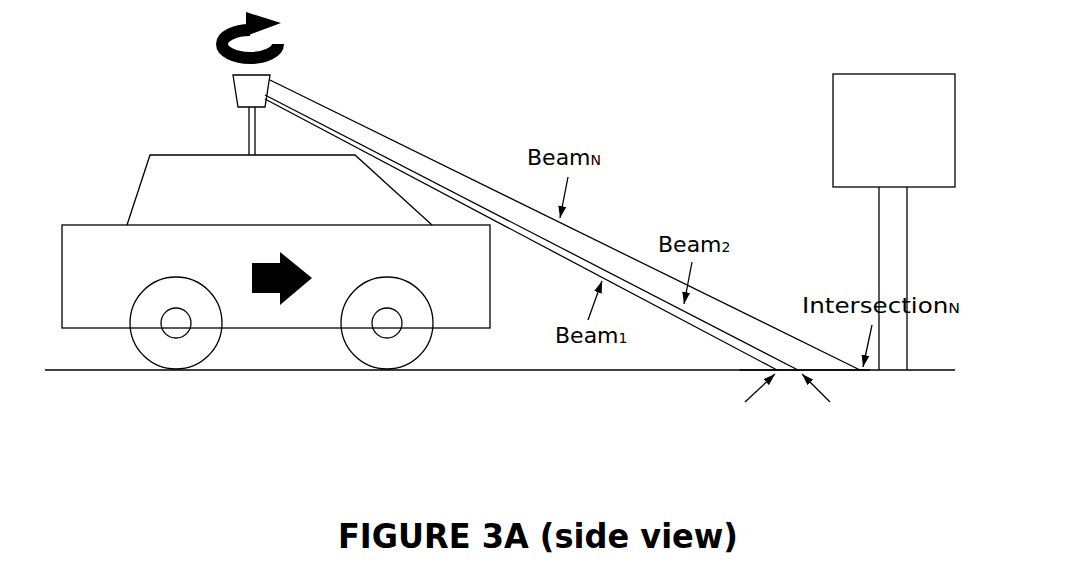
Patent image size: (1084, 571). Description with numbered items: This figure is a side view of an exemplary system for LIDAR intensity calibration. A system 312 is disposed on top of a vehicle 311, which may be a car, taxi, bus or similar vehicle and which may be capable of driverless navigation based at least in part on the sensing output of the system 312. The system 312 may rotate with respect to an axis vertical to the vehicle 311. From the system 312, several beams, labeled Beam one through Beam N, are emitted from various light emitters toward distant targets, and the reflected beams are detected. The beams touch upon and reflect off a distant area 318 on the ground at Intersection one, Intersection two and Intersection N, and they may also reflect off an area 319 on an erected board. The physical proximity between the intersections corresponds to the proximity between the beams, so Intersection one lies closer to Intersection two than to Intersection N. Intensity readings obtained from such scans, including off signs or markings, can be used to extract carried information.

The vehicle 311 is at (172, 154).
The system 312 is at (233, 97).
The area 318 is at (868, 478).
The area 319 is at (874, 157).